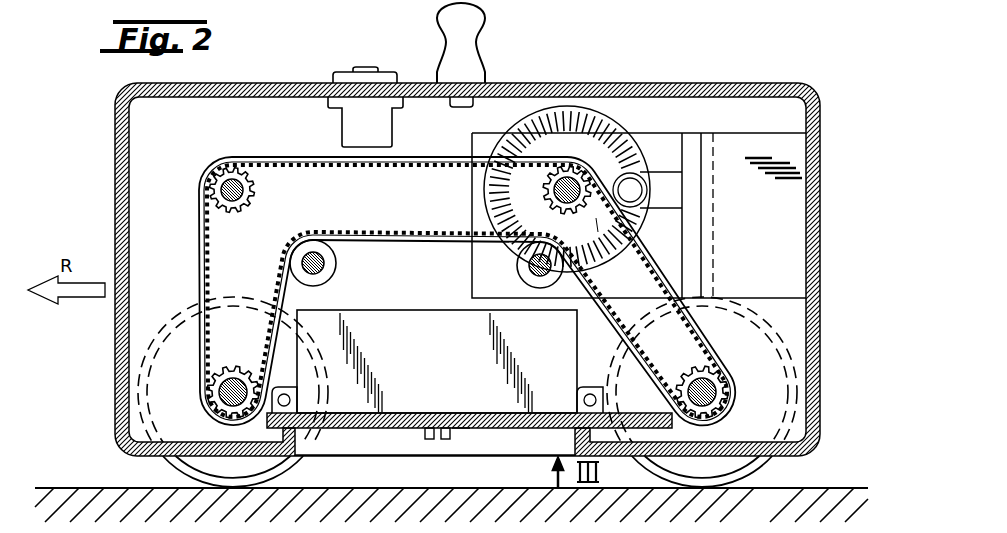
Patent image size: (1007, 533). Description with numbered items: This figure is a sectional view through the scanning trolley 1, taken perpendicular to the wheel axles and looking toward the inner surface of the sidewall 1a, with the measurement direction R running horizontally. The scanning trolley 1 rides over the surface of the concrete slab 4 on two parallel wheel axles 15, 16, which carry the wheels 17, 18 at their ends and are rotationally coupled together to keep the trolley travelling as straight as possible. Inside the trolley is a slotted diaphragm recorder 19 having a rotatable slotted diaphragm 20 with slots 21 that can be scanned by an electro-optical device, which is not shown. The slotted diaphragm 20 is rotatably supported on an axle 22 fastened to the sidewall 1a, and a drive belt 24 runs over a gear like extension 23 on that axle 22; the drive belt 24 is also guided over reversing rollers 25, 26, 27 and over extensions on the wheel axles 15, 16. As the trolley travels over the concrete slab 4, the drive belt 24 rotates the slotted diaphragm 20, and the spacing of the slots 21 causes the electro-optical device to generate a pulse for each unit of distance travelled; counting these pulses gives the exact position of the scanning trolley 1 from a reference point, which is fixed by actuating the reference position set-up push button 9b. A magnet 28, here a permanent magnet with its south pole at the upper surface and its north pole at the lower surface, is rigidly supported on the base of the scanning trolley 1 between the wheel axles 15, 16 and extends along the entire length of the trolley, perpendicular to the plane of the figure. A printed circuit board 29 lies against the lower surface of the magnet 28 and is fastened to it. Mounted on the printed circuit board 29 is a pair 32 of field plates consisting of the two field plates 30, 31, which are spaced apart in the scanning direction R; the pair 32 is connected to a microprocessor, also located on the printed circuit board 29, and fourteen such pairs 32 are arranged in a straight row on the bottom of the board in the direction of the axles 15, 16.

The scanning trolley 1 is at (768, 84).
The sidewall 1a is at (788, 311).
The concrete slab 4 is at (50, 487).
The reference position set-up push button 9b is at (358, 68).
The wheel axle 15 is at (232, 364).
The wheel axle 16 is at (716, 390).
The wheel 17 is at (197, 462).
The wheel 18 is at (738, 462).
The slotted diaphragm recorder 19 is at (665, 133).
The slotted diaphragm 20 is at (615, 125).
The slots 21 is at (594, 118).
The axle 22 is at (548, 192).
The gear like extension 23 is at (595, 229).
The drive belt 24 is at (283, 157).
The reversing roller 25 is at (258, 192).
The reversing roller 26 is at (334, 264).
The reversing roller 27 is at (526, 273).
The magnet 28 is at (412, 313).
The printed circuit board 29 is at (353, 430).
The field plate 30 is at (428, 441).
The field plate 31 is at (445, 441).
The pair of field plates 32 is at (462, 436).